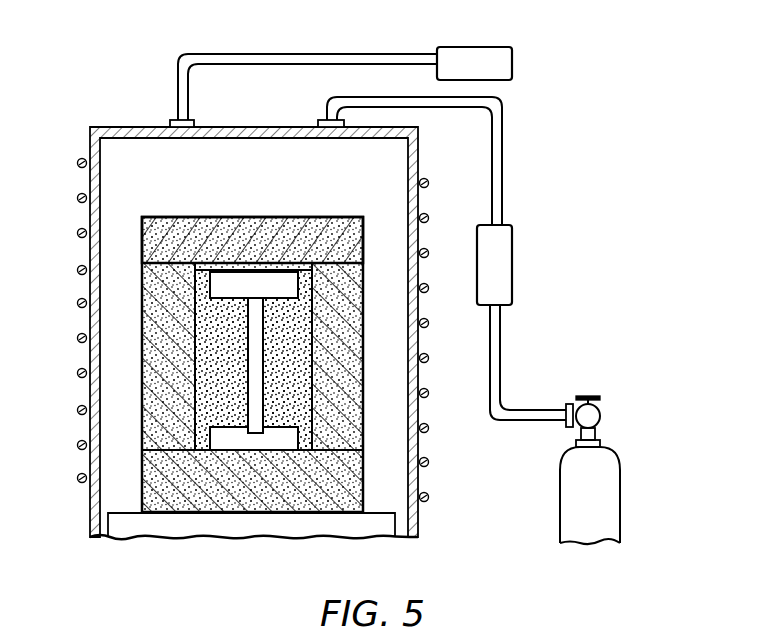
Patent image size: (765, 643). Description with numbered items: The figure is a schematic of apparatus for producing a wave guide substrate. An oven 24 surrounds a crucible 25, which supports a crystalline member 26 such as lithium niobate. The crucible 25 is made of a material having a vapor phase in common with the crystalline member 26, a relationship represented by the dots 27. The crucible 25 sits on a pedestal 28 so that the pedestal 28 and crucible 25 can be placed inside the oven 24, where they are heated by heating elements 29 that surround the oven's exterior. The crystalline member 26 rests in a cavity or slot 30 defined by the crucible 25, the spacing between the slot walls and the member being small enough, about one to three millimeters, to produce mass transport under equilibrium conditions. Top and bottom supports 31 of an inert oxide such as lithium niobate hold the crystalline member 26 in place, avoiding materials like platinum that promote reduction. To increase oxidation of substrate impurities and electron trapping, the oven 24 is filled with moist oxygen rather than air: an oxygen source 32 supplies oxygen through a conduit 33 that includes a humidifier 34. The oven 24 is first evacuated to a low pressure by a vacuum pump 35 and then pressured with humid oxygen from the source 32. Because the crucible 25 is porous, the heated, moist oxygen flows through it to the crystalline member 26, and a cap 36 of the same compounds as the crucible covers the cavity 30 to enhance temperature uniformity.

The oven 24 is at (90, 348).
The crucible 25 is at (363, 492).
The crystalline member 26 is at (288, 400).
The dots 27 is at (292, 348).
The pedestal 28 is at (160, 520).
The heating elements 29 is at (80, 234).
The slot 30 is at (212, 216).
The top and bottom supports 31 is at (298, 288).
The oxygen source 32 is at (560, 484).
The conduit 33 is at (484, 110).
The humidifier 34 is at (514, 277).
The vacuum pump 35 is at (500, 68).
The cap 36 is at (336, 217).